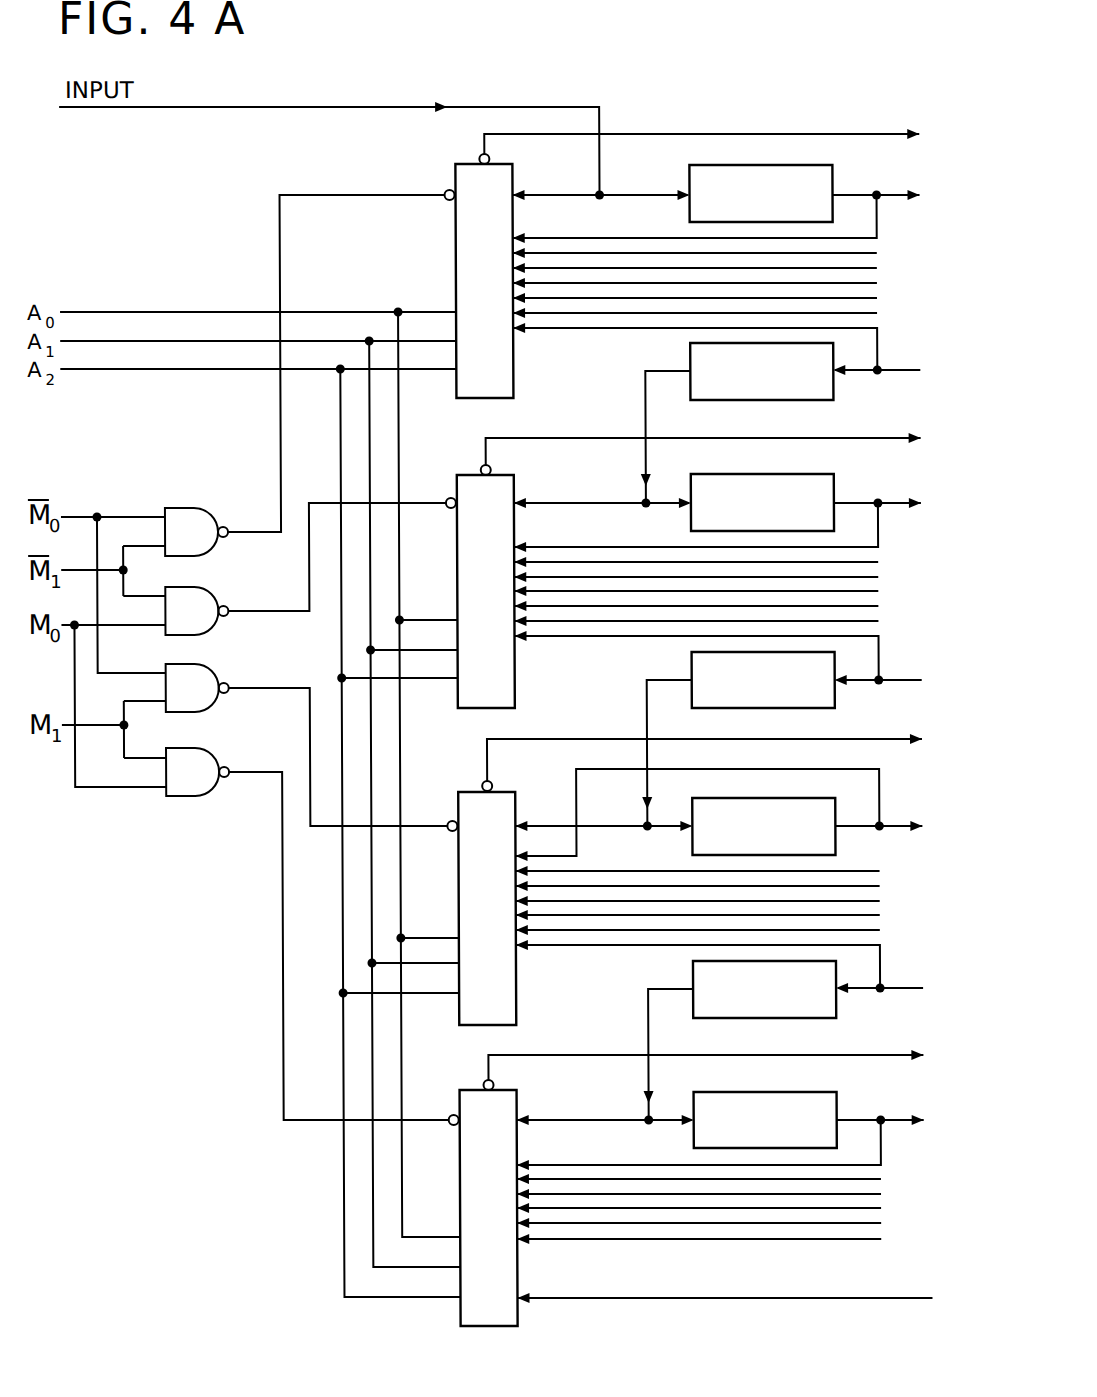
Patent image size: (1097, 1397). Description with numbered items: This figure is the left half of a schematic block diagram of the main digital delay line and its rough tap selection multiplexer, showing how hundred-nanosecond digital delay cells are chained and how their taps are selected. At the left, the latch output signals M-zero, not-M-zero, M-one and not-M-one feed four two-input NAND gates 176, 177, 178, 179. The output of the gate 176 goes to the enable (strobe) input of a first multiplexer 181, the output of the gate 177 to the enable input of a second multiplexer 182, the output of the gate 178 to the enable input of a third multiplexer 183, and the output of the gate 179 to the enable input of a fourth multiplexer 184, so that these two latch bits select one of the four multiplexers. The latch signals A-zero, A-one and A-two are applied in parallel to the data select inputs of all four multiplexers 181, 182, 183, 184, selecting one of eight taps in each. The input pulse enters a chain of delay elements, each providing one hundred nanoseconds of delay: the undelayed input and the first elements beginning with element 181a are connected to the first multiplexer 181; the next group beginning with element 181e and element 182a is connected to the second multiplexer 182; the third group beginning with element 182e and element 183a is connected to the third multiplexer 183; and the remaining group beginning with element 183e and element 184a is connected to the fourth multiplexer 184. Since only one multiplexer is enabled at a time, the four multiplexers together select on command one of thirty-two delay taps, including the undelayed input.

The two input NAND gate 176 is at (204, 516).
The two input NAND gate 177 is at (206, 596).
The two input NAND gate 178 is at (208, 671).
The two input NAND gate 179 is at (209, 756).
The first multiplexer 181 is at (503, 204).
The hundred-nanosecond delay element 181a is at (733, 207).
The hundred-nanosecond delay element 181e is at (733, 384).
The second multiplexer 182 is at (503, 514).
The hundred-nanosecond delay element 182a is at (733, 516).
The hundred-nanosecond delay element 182e is at (733, 692).
The third multiplexer 183 is at (503, 837).
The hundred-nanosecond delay element 183a is at (733, 839).
The hundred-nanosecond delay element 183e is at (733, 1002).
The fourth multiplexer 184 is at (503, 1131).
The hundred-nanosecond delay element 184a is at (733, 1132).